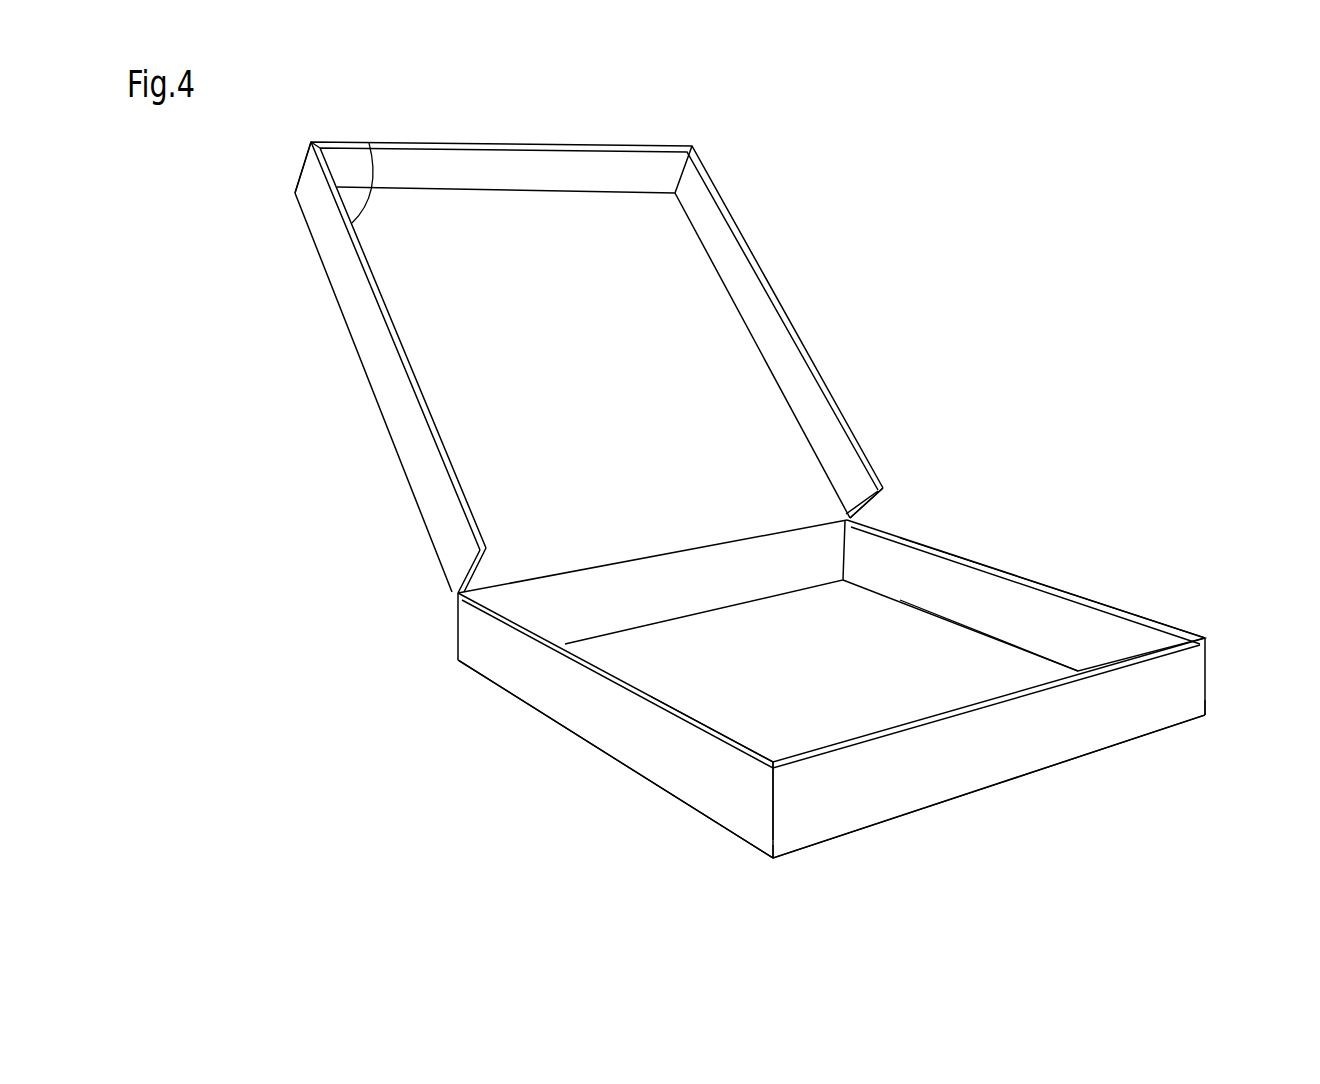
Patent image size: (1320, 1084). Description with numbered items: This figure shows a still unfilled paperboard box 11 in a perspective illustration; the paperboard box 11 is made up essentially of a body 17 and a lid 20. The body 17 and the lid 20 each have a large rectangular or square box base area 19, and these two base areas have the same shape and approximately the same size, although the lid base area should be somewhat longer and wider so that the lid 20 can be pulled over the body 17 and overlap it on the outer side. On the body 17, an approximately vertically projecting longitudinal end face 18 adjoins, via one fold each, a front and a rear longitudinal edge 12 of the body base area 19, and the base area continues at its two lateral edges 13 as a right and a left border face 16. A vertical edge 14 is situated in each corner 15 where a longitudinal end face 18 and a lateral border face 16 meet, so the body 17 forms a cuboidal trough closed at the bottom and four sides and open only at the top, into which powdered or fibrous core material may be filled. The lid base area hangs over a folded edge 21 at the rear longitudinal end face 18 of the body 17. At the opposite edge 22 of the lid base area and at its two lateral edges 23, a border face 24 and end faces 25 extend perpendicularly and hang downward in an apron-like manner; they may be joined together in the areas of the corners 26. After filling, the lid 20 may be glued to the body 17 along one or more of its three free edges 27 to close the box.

The paperboard box 11 is at (960, 336).
The longitudinal edge 12 is at (815, 592).
The lateral edge 13 is at (530, 705).
The vertical edge 14 is at (456, 624).
The corner 15 is at (1206, 718).
The border face 16 is at (1073, 627).
The body 17 is at (1055, 737).
The longitudinal end face 18 is at (605, 603).
The box base area 19 is at (718, 695).
The lid 20 is at (693, 287).
The folded edge 21 is at (803, 527).
The opposite edge 22 is at (467, 187).
The lateral edge 23 is at (386, 424).
The border face 24 is at (547, 173).
The end face 25 is at (362, 320).
The corner 26 is at (296, 192).
The free edge 27 is at (392, 138).